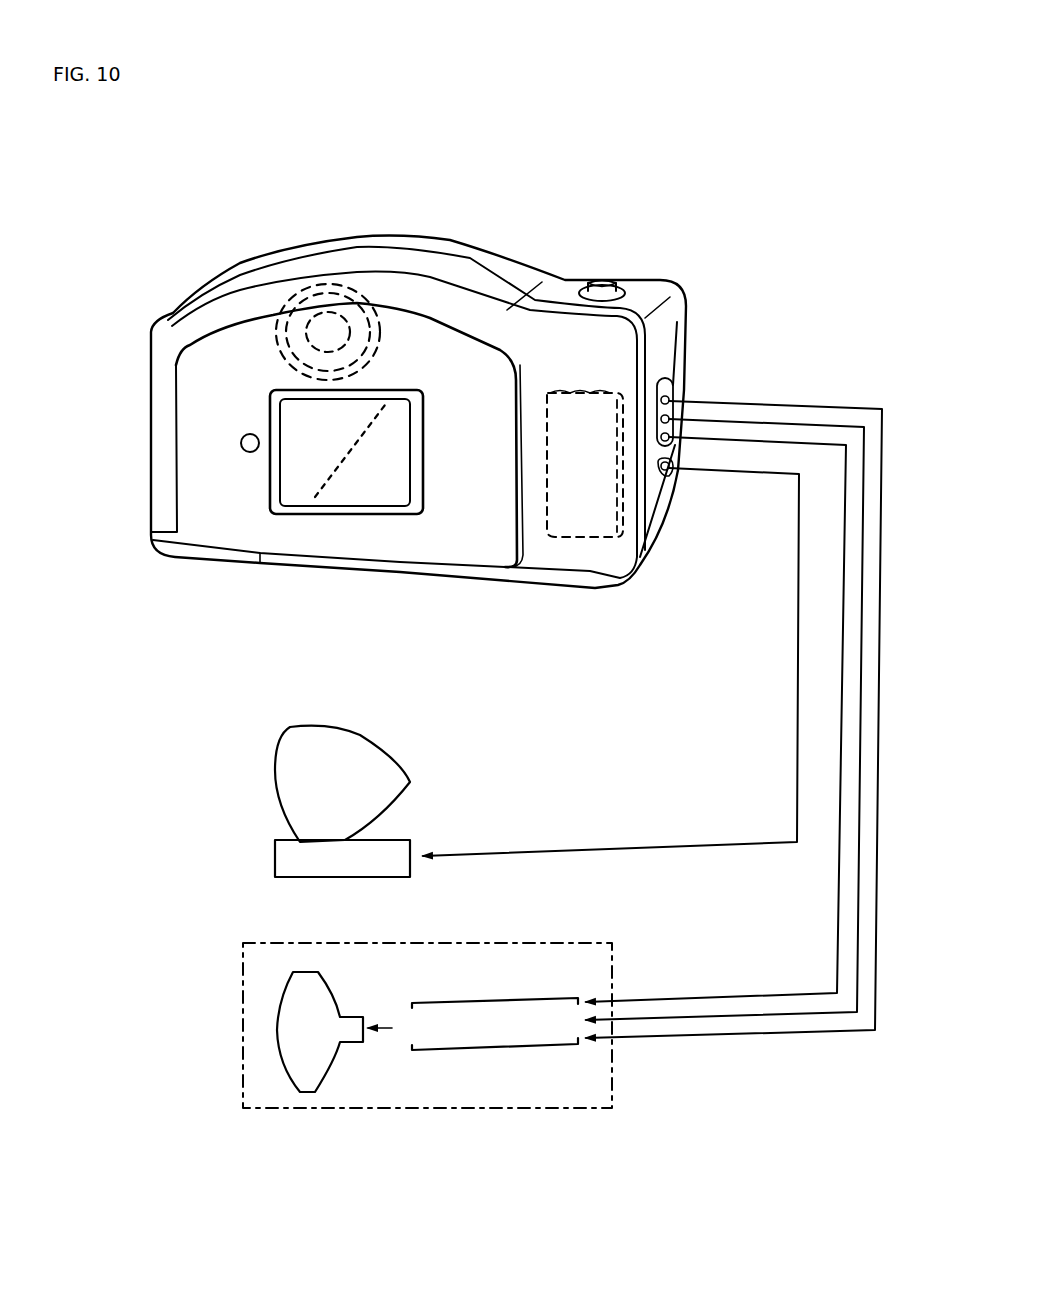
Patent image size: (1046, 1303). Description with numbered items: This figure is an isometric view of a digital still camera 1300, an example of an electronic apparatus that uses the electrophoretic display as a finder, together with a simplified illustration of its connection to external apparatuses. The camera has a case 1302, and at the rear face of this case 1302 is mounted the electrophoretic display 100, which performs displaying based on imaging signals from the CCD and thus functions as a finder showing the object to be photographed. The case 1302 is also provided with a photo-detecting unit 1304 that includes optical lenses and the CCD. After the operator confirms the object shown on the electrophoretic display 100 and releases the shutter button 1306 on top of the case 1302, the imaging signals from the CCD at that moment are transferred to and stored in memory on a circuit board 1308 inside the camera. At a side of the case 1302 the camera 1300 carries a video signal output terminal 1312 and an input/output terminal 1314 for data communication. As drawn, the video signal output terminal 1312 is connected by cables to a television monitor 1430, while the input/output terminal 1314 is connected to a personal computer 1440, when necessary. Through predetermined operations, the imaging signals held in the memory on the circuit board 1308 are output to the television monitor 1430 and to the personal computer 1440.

The digital still camera 1300 is at (513, 168).
The case 1302 is at (151, 362).
The photo-detecting unit 1304 is at (362, 292).
The shutter button 1306 is at (605, 283).
The circuit board 1308 is at (560, 540).
The video signal output terminal 1312 is at (676, 382).
The input/output terminal for data communication 1314 is at (680, 483).
The electrophoretic display 100 is at (380, 486).
The personal computer 1440 is at (275, 775).
The television monitor 1430 is at (243, 1000).